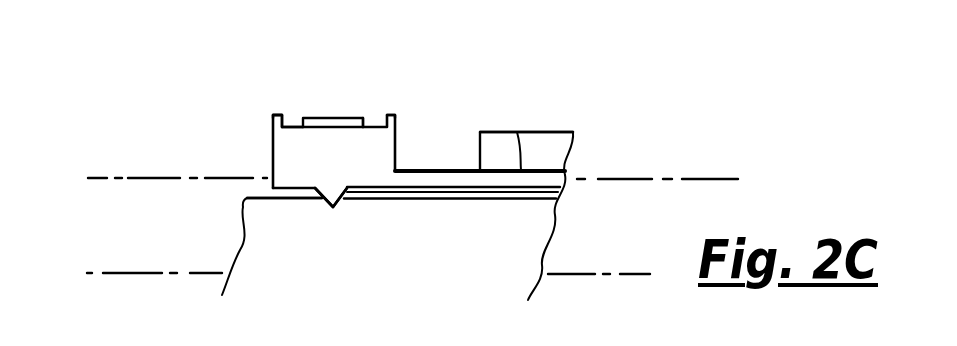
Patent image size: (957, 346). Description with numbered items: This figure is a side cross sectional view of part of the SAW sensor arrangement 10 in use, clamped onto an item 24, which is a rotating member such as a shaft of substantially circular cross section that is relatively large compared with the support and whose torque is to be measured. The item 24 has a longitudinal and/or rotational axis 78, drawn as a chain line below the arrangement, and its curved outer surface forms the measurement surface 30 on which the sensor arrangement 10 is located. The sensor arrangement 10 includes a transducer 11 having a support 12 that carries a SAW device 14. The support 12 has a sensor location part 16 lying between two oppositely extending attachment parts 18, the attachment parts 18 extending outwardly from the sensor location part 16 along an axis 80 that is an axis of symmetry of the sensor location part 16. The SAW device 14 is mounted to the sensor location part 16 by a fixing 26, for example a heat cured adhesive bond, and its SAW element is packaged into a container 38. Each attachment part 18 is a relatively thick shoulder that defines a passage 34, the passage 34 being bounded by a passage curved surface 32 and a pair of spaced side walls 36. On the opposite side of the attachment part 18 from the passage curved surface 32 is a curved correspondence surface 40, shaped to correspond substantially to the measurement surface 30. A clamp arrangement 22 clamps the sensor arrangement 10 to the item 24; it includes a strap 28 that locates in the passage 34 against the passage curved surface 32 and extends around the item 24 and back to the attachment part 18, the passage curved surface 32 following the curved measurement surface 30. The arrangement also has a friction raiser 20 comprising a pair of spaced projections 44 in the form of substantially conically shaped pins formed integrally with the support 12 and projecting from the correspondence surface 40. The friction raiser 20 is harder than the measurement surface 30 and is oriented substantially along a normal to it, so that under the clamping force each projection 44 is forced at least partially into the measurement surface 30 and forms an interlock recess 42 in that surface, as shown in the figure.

The SAW sensor arrangement 10 is at (652, 58).
The transducer 11 is at (546, 110).
The support 12 is at (273, 133).
The SAW device 14 is at (494, 122).
The sensor location part 16 is at (433, 170).
The attachment part 18 is at (290, 152).
The friction raiser 20 is at (343, 198).
The clamp arrangement 22 is at (340, 112).
The item 24 is at (561, 223).
The fixing 26 is at (517, 132).
The strap 28 is at (363, 113).
The measurement surface 30 is at (432, 200).
The passage curved surface 32 is at (297, 117).
The passage 34 is at (284, 112).
The side wall 36 is at (283, 115).
The container 38 is at (573, 132).
The correspondence surface 40 is at (278, 198).
The interlock recess 42 is at (333, 204).
The projection 44 is at (348, 195).
The axis 78 is at (122, 274).
The axis 80 is at (140, 177).